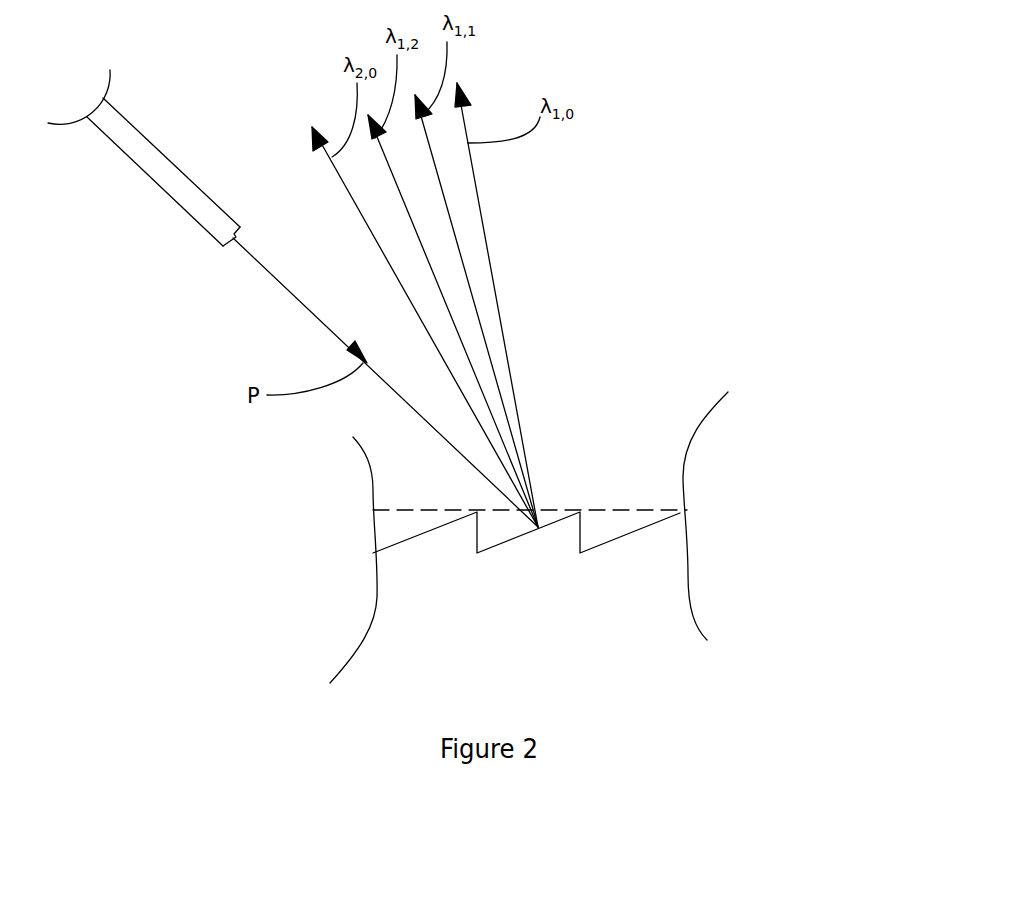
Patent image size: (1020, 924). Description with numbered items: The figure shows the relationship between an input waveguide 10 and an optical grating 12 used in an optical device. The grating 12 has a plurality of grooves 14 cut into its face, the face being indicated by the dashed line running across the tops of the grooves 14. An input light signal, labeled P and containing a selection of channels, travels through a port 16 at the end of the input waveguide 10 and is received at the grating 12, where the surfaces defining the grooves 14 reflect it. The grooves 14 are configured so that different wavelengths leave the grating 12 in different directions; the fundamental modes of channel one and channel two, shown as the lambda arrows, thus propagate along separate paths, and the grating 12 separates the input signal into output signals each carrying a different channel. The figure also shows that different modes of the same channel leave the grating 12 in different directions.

The input waveguide 10 is at (188, 213).
The optical grating 12 is at (529, 528).
The grooves 14 is at (430, 528).
The port 16 is at (233, 247).